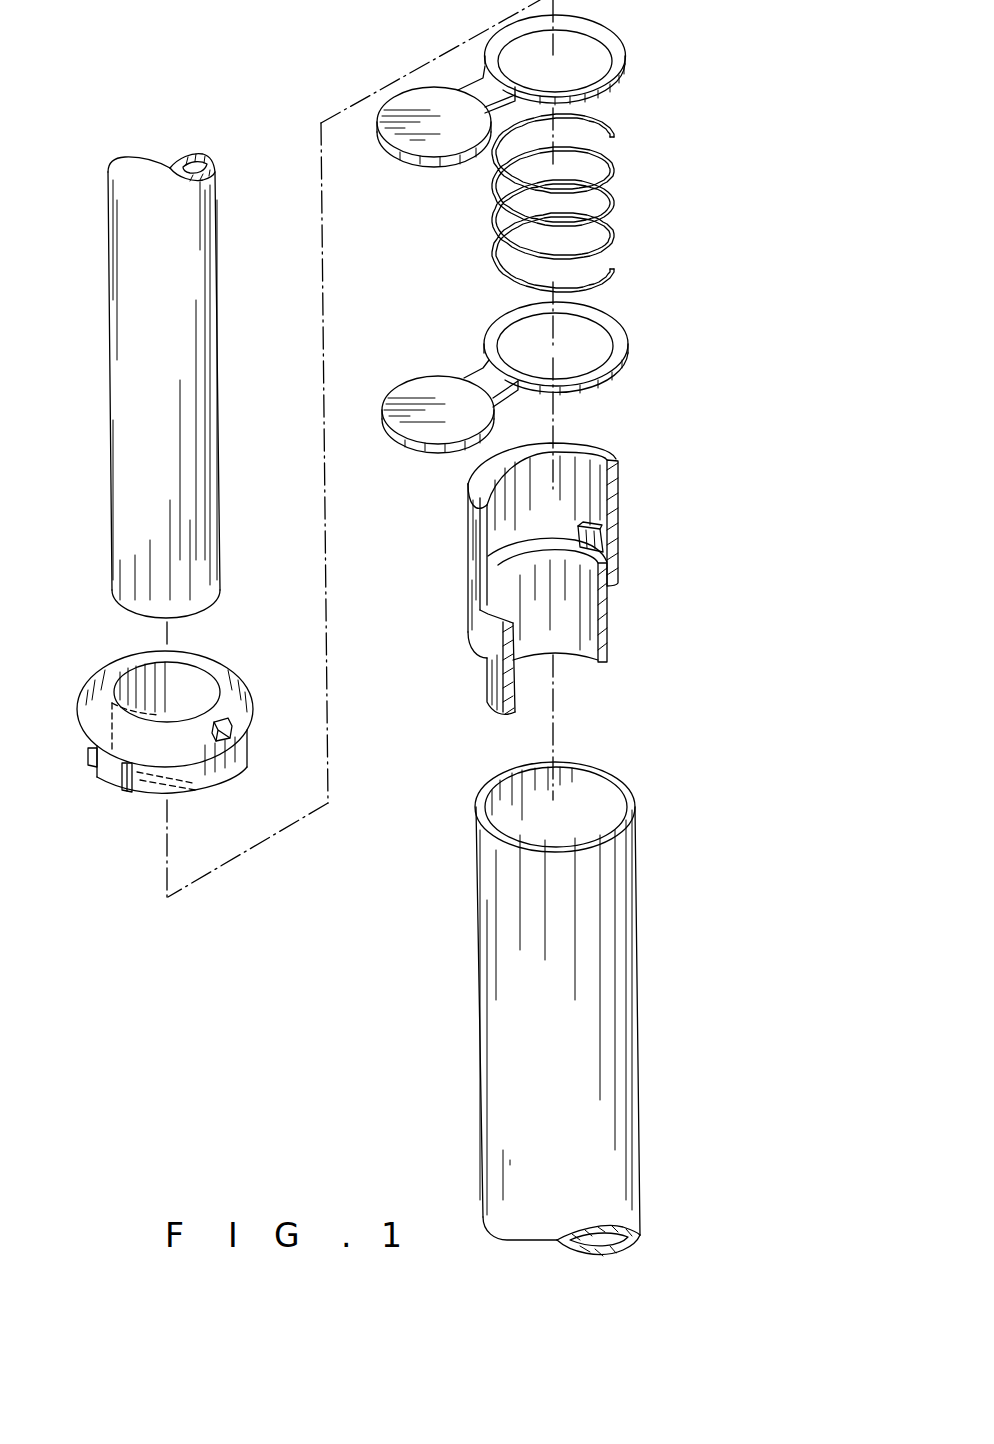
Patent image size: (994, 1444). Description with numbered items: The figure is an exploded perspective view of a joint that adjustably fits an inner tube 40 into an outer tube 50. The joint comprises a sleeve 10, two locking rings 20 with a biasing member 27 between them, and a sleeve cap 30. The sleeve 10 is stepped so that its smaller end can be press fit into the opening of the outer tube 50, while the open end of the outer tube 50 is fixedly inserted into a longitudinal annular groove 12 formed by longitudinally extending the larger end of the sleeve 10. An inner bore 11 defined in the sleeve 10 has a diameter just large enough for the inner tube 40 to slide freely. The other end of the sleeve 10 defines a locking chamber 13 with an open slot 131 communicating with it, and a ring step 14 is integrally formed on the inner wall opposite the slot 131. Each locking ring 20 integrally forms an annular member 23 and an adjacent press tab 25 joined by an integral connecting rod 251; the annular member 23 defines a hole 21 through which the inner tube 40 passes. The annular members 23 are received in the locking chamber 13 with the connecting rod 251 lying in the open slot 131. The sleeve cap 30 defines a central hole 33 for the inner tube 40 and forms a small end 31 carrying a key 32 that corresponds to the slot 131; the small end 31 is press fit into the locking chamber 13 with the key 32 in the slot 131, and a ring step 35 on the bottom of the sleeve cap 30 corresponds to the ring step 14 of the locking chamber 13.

The sleeve 10 is at (553, 605).
The inner bore 11 is at (585, 647).
The longitudinal annular groove 12 is at (490, 697).
The locking chamber 13 is at (600, 472).
The open slot 131 is at (475, 578).
The ring step 14 is at (600, 546).
The locking ring 20 is at (614, 27).
The hole 21 is at (617, 353).
The annular member 23 is at (593, 323).
The press tab 25 is at (422, 427).
The connecting rod 251 is at (483, 368).
The biasing member 27 is at (607, 200).
The sleeve cap 30 is at (158, 745).
The small end 31 is at (90, 753).
The key 32 is at (117, 778).
The central hole 33 is at (203, 682).
The ring step 35 is at (247, 747).
The inner tube 40 is at (112, 524).
The outer tube 50 is at (627, 990).